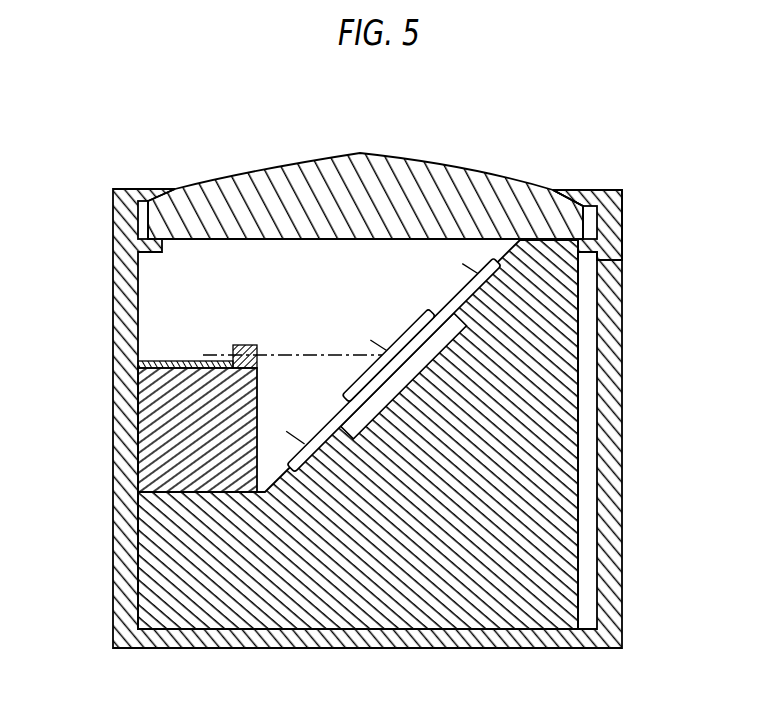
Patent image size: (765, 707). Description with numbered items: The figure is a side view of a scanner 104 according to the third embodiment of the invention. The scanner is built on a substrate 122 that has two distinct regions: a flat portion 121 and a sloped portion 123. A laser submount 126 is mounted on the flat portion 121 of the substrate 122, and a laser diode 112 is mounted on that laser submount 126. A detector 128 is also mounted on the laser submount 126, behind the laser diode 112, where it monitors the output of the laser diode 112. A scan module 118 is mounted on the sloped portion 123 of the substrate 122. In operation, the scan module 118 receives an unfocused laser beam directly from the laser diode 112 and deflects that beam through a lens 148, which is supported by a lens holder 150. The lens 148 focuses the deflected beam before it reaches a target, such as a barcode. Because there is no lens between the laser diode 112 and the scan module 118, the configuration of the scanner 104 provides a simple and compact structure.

The scanner 104 is at (183, 150).
The lens 148 is at (365, 153).
The lens holder 150 is at (598, 190).
The scan module 118 is at (442, 302).
The detector 128 is at (168, 358).
The laser diode 112 is at (238, 344).
The sloped portion 123 is at (562, 342).
The laser submount 126 is at (148, 417).
The flat portion 121 is at (148, 537).
The substrate 122 is at (425, 612).